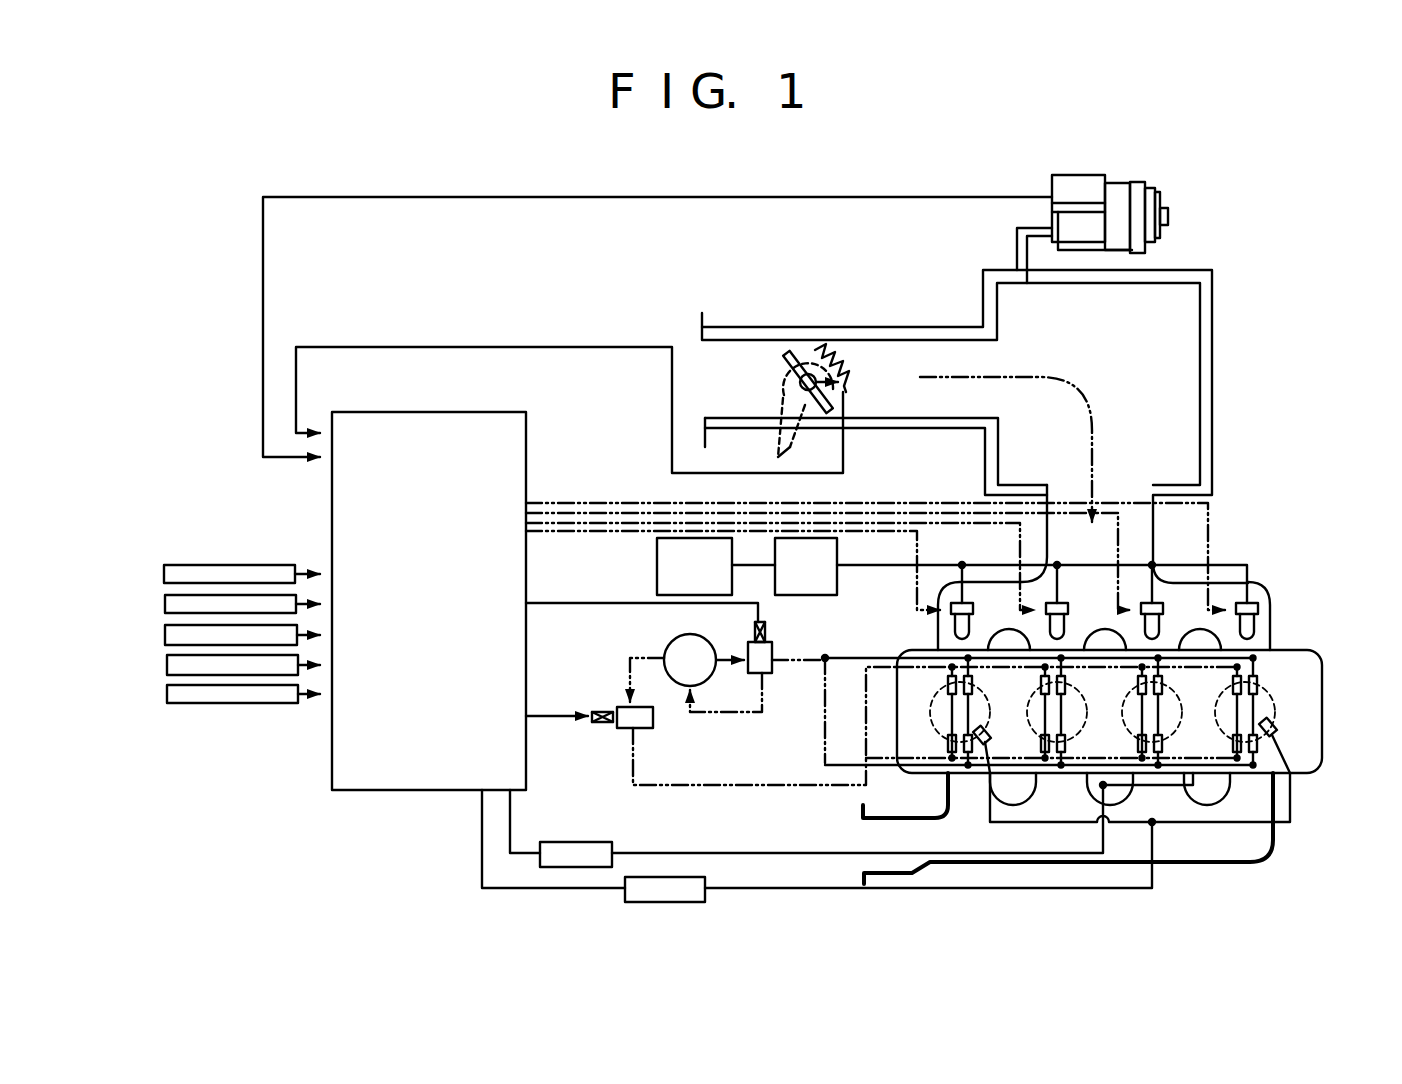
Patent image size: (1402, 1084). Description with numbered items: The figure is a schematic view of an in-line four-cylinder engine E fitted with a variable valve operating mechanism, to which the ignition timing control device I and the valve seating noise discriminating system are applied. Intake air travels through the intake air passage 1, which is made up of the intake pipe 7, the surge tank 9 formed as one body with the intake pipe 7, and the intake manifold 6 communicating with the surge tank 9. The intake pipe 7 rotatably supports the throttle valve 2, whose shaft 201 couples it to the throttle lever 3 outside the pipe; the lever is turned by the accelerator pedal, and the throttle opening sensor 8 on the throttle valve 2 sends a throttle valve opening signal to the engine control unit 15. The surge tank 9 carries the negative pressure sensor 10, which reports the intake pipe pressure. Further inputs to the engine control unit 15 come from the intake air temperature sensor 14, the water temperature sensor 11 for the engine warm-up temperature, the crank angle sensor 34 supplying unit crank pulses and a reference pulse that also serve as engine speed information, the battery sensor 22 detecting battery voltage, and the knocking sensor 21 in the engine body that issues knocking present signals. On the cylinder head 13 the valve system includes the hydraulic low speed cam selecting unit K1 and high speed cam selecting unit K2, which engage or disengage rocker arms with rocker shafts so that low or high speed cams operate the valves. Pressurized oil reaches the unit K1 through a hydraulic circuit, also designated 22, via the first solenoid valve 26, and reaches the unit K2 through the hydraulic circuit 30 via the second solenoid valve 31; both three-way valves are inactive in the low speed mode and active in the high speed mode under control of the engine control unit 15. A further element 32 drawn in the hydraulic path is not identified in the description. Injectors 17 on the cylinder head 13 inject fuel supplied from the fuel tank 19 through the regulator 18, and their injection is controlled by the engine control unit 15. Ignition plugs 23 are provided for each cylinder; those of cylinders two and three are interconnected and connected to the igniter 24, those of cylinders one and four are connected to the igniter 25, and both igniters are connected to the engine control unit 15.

The intake air passage 1 is at (917, 360).
The throttle valve 2 is at (783, 362).
The shaft 201 is at (800, 386).
The throttle lever 3 is at (778, 452).
The intake pipe 7 is at (893, 423).
The throttle opening sensor 8 is at (848, 366).
The surge tank 9 is at (1213, 385).
The negative pressure sensor 10 is at (1135, 175).
The intake manifold 6 is at (1272, 642).
The engine E is at (1283, 626).
The injectors 17 is at (945, 630).
The cylinder head 13 is at (1322, 688).
The ignition plugs 23 is at (988, 775).
The low speed cam selecting unit K1 is at (948, 686).
The high speed cam selecting unit K2 is at (972, 684).
The intake air temperature sensor 14 is at (164, 572).
The water temperature sensor 11 is at (165, 604).
The crank angle sensor 34 is at (165, 635).
The battery sensor 22 is at (167, 662).
The knocking sensor 21 is at (167, 692).
The engine control unit 15 is at (408, 790).
The fuel tank 19 is at (657, 563).
The regulator 18 is at (837, 552).
The hydraulic circuit 30 is at (843, 656).
The second solenoid valve 31 is at (772, 676).
The oil pump 32 is at (687, 668).
The first solenoid valve 26 is at (640, 728).
The igniter 24 is at (566, 848).
The igniter 25 is at (640, 900).
The ignition timing control device I is at (412, 882).